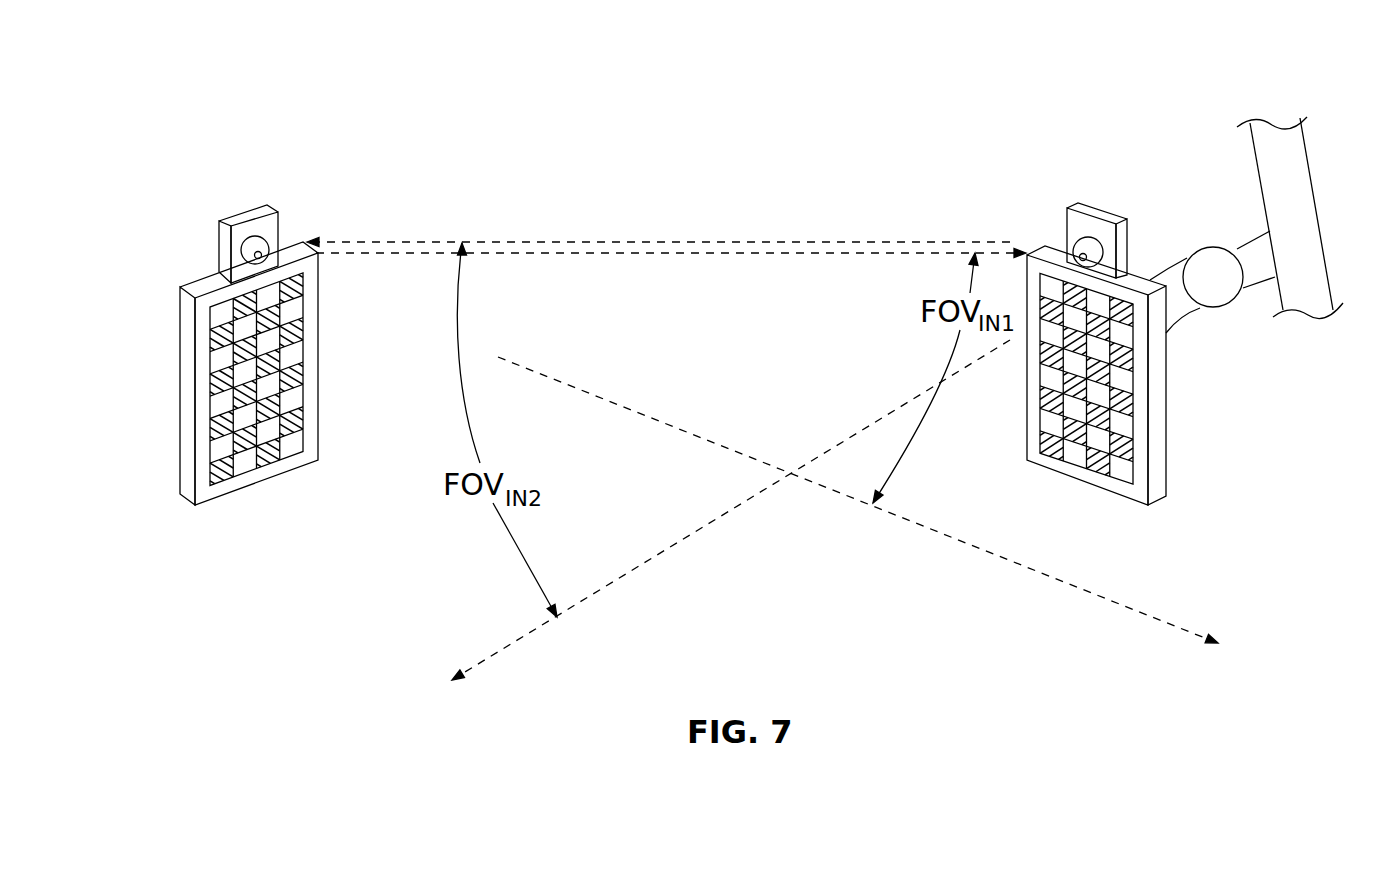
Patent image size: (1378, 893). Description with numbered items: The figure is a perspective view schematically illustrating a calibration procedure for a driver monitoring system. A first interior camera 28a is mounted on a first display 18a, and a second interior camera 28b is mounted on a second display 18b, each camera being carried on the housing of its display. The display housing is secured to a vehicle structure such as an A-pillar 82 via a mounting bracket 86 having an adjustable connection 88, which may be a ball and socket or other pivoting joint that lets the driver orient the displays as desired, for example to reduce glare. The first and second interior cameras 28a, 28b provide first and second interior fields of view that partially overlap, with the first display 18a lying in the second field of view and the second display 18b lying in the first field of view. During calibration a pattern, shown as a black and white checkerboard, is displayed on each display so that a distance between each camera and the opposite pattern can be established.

The first display 18a is at (170, 511).
The second display 18b is at (1188, 511).
The first interior camera 28a is at (263, 246).
The second interior camera 28b is at (1086, 243).
The A-pillar 82 is at (1277, 143).
The mounting bracket 86 is at (1254, 316).
The adjustable connection 88 is at (1215, 267).